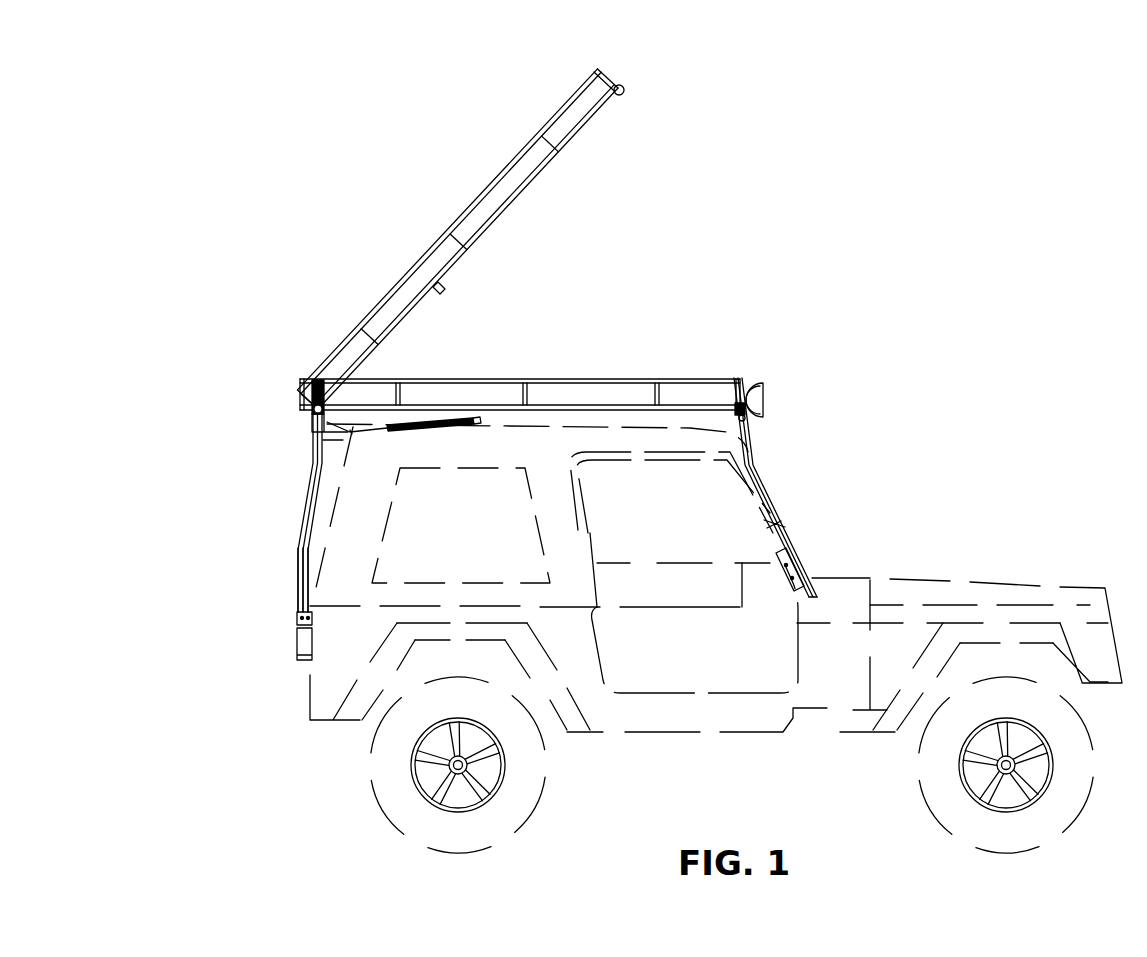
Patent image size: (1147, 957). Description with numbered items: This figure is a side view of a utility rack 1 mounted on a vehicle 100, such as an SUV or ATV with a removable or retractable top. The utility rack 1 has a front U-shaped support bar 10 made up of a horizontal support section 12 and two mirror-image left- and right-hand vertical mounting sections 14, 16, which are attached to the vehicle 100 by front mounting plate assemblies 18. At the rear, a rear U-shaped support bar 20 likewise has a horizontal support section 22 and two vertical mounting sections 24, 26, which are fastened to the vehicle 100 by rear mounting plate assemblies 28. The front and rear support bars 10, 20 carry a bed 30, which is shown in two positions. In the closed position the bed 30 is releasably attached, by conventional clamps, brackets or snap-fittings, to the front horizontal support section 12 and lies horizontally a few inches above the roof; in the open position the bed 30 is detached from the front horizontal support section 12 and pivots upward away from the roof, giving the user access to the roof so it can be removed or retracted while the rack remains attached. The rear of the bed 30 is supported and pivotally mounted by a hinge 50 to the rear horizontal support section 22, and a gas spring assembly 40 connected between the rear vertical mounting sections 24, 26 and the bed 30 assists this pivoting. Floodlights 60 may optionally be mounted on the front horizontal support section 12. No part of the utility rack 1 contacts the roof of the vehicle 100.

The utility rack 1 is at (637, 219).
The front U-shaped support bar 10 is at (764, 478).
The horizontal support section 12 is at (760, 416).
The vertical mounting section 14 is at (842, 521).
The vertical mounting section 16 is at (786, 537).
The front mounting plate assembly 18 is at (797, 567).
The rear U-shaped support bar 20 is at (310, 511).
The horizontal support section 22 is at (312, 417).
The vertical mounting section 24 is at (246, 576).
The vertical mounting section 26 is at (299, 553).
The rear mounting plate assembly 28 is at (296, 619).
The bed 30 is at (606, 84).
The gas spring assembly 40 is at (397, 432).
The hinge 50 is at (316, 408).
The floodlight 60 is at (758, 382).
The vehicle 100 is at (1047, 567).